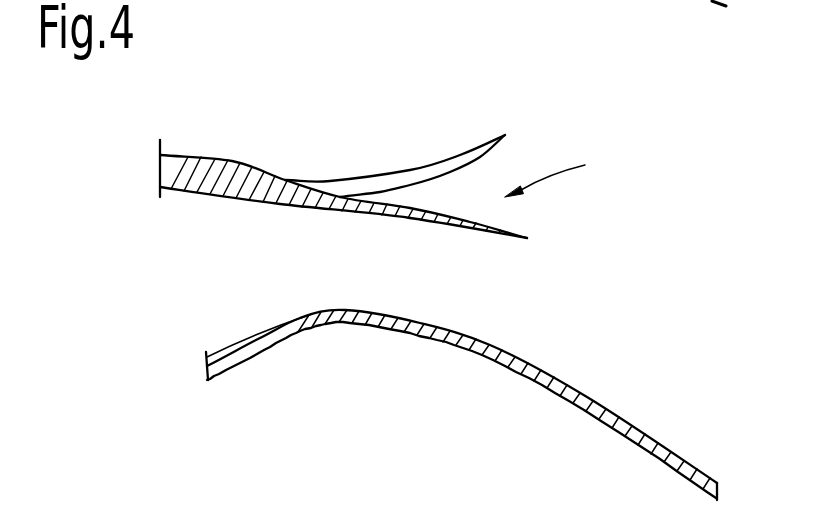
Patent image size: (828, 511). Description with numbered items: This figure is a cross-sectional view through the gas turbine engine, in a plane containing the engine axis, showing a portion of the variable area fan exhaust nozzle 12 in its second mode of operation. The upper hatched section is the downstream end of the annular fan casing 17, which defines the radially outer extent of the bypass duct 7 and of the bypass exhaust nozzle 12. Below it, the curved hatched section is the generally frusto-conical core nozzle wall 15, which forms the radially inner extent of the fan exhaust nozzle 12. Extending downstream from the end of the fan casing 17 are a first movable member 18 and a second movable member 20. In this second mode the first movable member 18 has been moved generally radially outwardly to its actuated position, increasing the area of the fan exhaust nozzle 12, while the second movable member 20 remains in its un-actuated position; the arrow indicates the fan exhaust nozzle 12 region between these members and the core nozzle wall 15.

The bypass duct 7 is at (213, 281).
The bypass exhaust nozzle 12 is at (562, 172).
The core nozzle wall 15 is at (335, 317).
The fan casing 17 is at (212, 174).
The first movable member 18 is at (443, 162).
The second movable member 20 is at (440, 227).